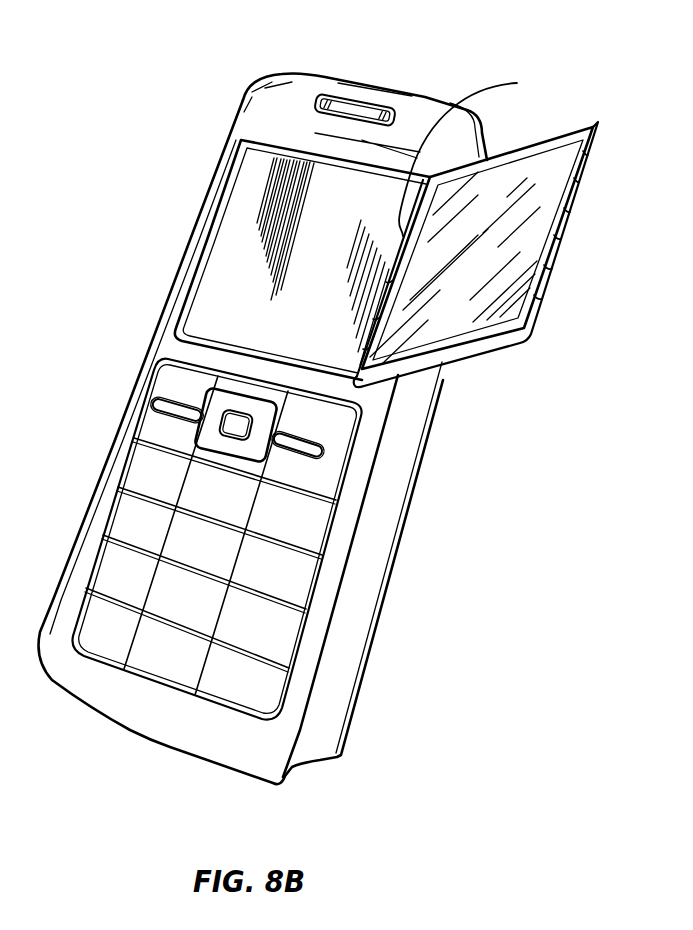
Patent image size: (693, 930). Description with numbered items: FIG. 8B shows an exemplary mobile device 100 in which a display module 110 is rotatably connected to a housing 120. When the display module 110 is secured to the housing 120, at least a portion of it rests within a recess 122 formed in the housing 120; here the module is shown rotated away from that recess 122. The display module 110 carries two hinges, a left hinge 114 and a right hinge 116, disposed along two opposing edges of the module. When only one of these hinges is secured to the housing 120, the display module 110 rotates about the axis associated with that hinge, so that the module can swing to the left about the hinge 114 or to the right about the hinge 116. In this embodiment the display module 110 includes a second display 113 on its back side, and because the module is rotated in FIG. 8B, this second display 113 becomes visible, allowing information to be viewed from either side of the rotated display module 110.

The mobile device 100 is at (152, 130).
The display module 110 is at (463, 360).
The second display 113 is at (530, 213).
The left hinge 114 is at (545, 312).
The right hinge 116 is at (479, 153).
The housing 120 is at (378, 520).
The recess 122 is at (230, 280).